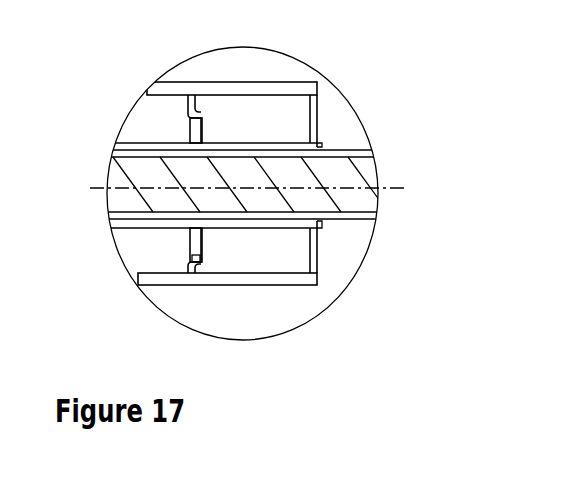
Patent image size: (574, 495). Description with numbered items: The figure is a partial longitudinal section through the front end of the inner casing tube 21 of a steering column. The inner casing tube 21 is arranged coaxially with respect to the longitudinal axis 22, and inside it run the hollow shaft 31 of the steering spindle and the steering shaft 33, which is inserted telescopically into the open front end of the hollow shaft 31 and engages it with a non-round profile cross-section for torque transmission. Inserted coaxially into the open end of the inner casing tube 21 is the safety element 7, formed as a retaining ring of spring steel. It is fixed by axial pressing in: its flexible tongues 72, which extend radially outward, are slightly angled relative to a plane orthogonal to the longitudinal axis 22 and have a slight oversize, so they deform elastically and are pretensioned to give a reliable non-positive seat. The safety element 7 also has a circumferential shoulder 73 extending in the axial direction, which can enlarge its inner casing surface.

The safety element 7 is at (190, 259).
The inner casing tube 21 is at (177, 273).
The longitudinal axis 22 is at (261, 227).
The hollow shaft 31 is at (170, 158).
The steering shaft 33 is at (249, 160).
The flexible tongues 72 is at (196, 95).
The shoulder 73 is at (207, 128).